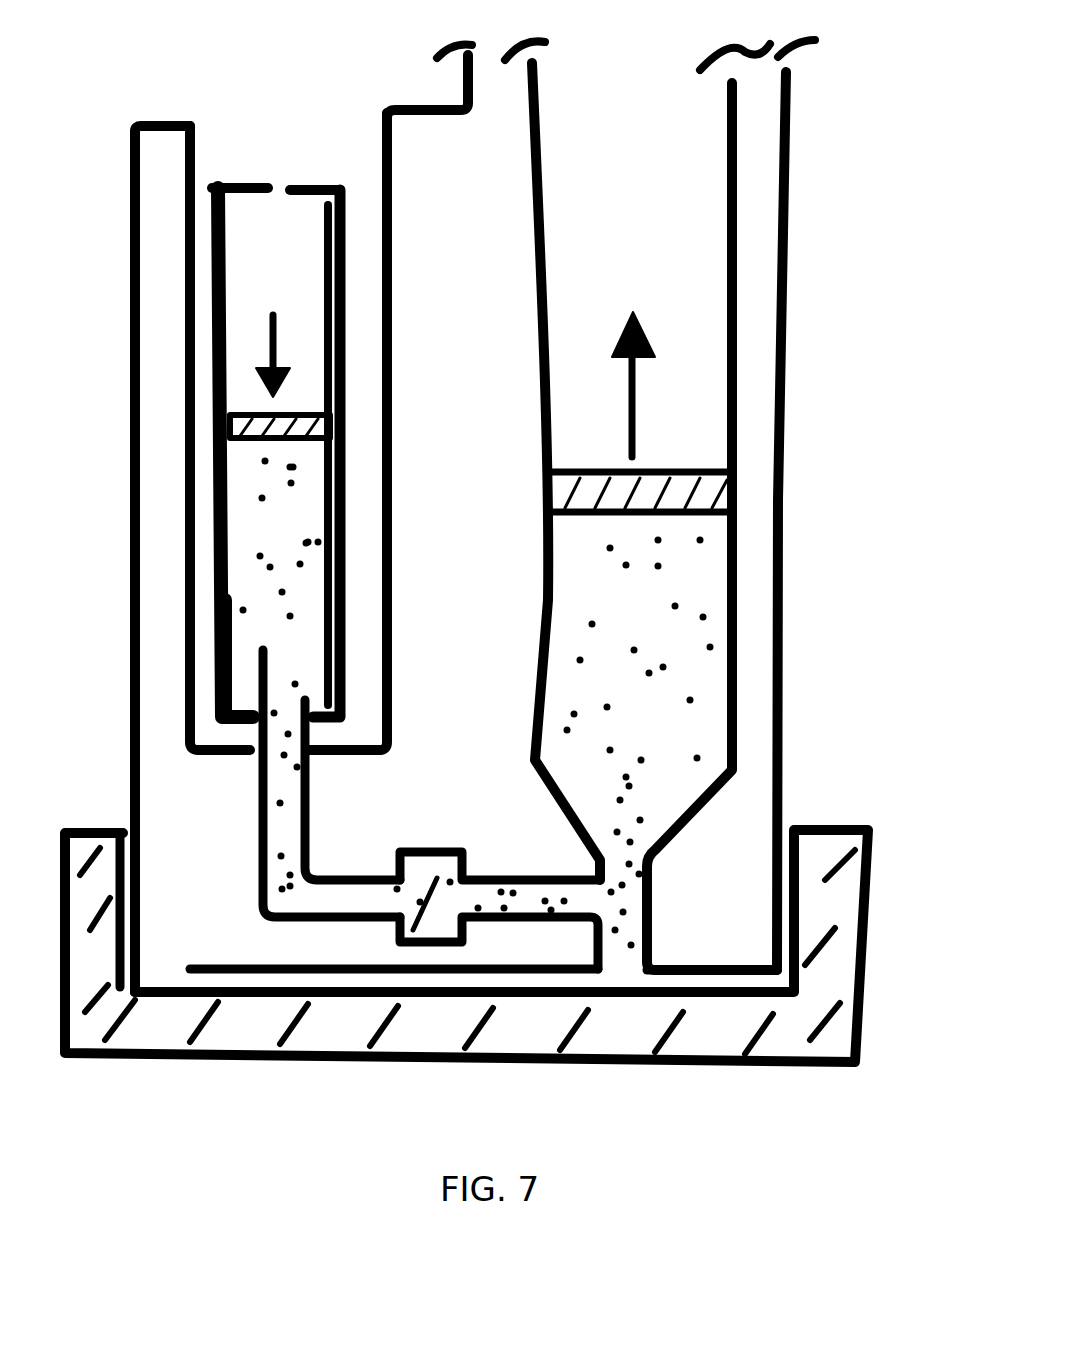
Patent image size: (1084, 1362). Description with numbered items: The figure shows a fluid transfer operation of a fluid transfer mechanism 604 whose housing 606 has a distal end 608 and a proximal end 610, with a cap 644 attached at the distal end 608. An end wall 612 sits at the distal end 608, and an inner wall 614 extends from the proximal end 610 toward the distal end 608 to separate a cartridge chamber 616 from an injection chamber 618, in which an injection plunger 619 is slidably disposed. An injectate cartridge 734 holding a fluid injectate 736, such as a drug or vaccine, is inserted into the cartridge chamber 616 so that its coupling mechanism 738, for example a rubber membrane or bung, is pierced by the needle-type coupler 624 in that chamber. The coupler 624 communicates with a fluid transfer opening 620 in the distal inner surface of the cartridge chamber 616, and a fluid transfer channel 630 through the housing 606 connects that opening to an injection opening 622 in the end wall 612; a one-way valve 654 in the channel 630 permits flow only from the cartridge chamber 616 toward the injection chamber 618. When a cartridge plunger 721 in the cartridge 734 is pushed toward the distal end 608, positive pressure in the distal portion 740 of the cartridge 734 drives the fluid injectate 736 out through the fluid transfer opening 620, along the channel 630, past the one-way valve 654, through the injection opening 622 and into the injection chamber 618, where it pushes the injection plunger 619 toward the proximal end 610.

The fluid transfer mechanism 604 is at (197, 1096).
The housing 606 is at (128, 516).
The distal end 608 is at (132, 808).
The proximal end 610 is at (130, 160).
The end wall 612 is at (350, 997).
The inner wall 614 is at (432, 142).
The cartridge chamber 616 is at (357, 358).
The injection chamber 618 is at (630, 295).
The injection plunger 619 is at (548, 495).
The fluid transfer opening 620 is at (327, 757).
The injection opening 622 is at (620, 973).
The coupler 624 is at (272, 660).
The fluid transfer channel 630 is at (253, 872).
The cap 644 is at (820, 1037).
The one-way valve 654 is at (462, 857).
The cartridge plunger 721 is at (248, 408).
The injectate cartridge 734 is at (250, 180).
The fluid injectate 736 is at (353, 510).
The coupling mechanism 738 is at (220, 673).
The distal portion 740 is at (300, 597).